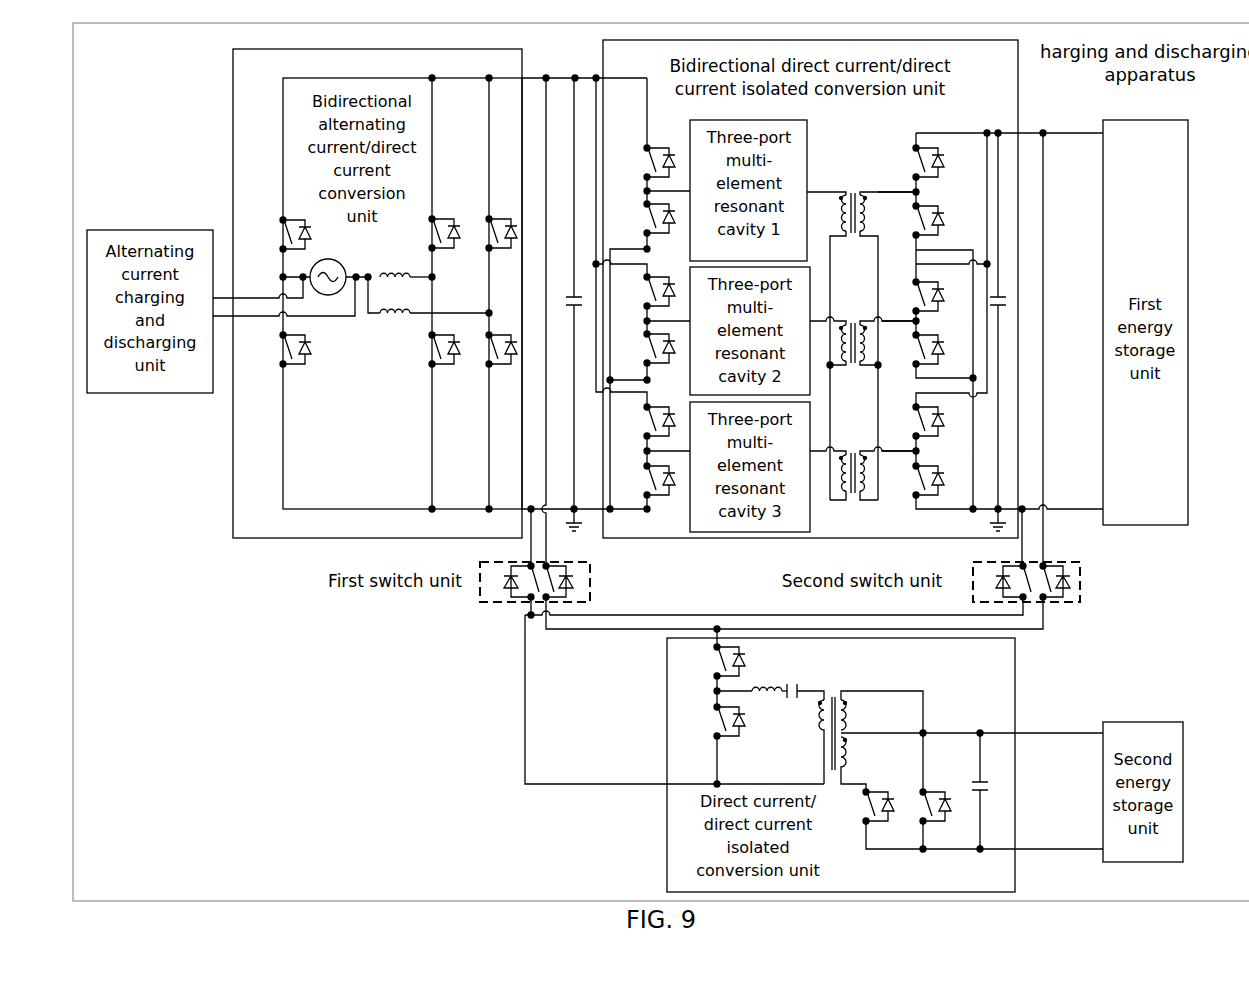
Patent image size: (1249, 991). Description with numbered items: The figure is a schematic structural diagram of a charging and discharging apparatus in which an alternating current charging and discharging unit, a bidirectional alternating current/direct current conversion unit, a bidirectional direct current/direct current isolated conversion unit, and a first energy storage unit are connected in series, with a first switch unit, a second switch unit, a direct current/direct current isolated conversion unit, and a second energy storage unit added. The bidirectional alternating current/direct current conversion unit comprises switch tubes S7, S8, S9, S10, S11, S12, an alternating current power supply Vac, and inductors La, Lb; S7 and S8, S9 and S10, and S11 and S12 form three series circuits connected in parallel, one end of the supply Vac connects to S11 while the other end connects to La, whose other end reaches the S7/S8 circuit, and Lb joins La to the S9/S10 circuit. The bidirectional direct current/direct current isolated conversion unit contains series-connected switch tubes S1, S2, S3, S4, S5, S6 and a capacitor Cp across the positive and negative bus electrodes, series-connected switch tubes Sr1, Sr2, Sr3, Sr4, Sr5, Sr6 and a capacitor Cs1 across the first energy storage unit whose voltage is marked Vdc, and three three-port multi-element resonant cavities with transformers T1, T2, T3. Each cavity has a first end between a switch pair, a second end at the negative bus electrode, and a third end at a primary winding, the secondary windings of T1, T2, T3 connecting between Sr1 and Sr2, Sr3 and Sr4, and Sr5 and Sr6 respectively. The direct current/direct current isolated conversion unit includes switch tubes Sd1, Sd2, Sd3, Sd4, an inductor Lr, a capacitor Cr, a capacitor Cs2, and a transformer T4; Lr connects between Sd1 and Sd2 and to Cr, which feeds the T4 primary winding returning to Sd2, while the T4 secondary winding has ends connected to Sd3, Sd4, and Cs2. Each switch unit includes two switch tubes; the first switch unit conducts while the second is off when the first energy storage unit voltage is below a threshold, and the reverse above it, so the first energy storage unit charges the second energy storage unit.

The switch tube S1 is at (648, 162).
The switch tube S2 is at (648, 218).
The switch tube S3 is at (648, 291).
The switch tube S4 is at (648, 348).
The switch tube S5 is at (648, 421).
The switch tube S6 is at (648, 480).
The switch tube S7 is at (432, 233).
The switch tube S8 is at (432, 349).
The switch tube S9 is at (489, 224).
The switch tube S10 is at (482, 342).
The switch tube S11 is at (275, 234).
The switch tube S12 is at (275, 349).
The switch tube Sr1 is at (912, 162).
The switch tube Sr2 is at (910, 220).
The switch tube Sr3 is at (911, 296).
The switch tube Sr4 is at (911, 349).
The switch tube Sr5 is at (911, 421).
The switch tube Sr6 is at (911, 480).
The switch tube Sd1 is at (711, 661).
The switch tube Sd2 is at (711, 721).
The switch tube Sd3 is at (983, 809).
The switch tube Sd4 is at (940, 810).
The transformer T1 is at (861, 334).
The transformer T2 is at (863, 333).
The transformer T3 is at (863, 464).
The transformer T4 is at (961, 728).
The inductor La is at (406, 264).
The inductor Lb is at (434, 301).
The inductor Lr is at (769, 677).
The capacitor Cr is at (804, 682).
The capacitor Cp is at (569, 304).
The capacitor Cs1 is at (1013, 332).
The capacitor Cs2 is at (986, 791).
The alternating current power supply Vac is at (328, 268).
The DC voltage Vdc is at (1009, 122).